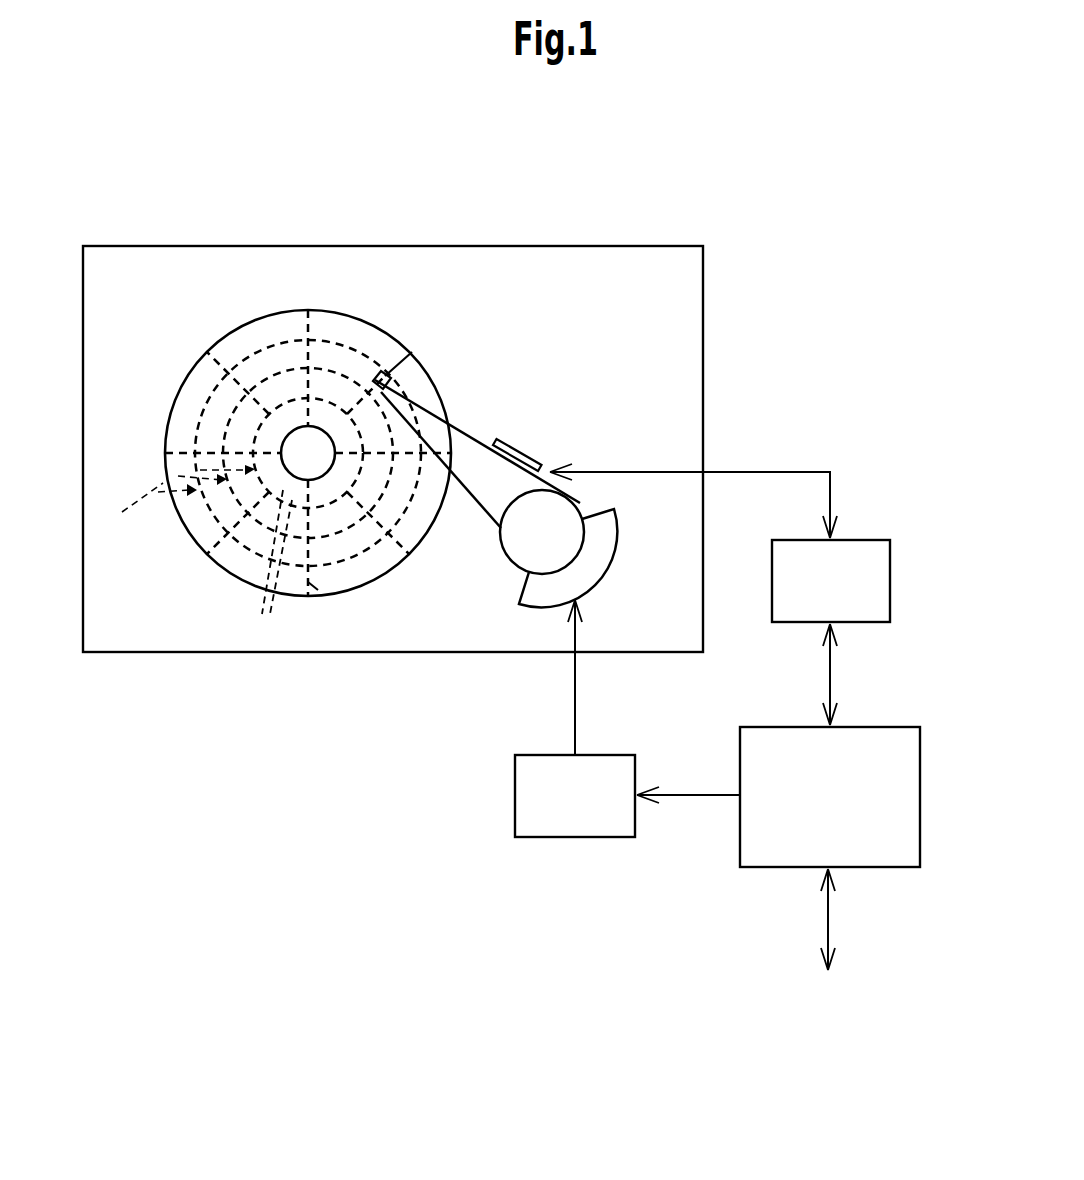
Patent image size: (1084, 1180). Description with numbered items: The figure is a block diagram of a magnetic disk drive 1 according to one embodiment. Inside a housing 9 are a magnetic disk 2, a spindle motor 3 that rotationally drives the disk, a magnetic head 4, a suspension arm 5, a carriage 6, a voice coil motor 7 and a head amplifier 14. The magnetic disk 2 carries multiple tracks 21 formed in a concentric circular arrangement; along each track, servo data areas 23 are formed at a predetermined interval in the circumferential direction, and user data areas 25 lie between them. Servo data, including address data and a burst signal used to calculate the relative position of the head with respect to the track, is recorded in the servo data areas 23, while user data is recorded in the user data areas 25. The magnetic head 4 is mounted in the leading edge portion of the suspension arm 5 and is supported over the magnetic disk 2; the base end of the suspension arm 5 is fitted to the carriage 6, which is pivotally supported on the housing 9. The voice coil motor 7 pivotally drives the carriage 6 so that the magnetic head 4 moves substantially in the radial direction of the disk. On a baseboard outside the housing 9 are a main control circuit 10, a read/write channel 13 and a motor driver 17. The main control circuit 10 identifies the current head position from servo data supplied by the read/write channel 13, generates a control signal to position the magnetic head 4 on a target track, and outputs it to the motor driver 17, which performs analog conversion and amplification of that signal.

The magnetic disk drive 1 is at (820, 206).
The magnetic disk 2 is at (293, 325).
The spindle motor 3 is at (298, 437).
The magnetic head 4 is at (383, 372).
The suspension arm 5 is at (457, 440).
The carriage 6 is at (486, 510).
The voice coil motor 7 is at (512, 590).
The housing 9 is at (610, 246).
The main control circuit 10 is at (890, 727).
The read/write channel 13 is at (868, 540).
The head amplifier 14 is at (524, 460).
The motor driver 17 is at (573, 838).
The tracks 21 is at (172, 499).
The servo data areas 23 is at (322, 590).
The user data areas 25 is at (267, 566).